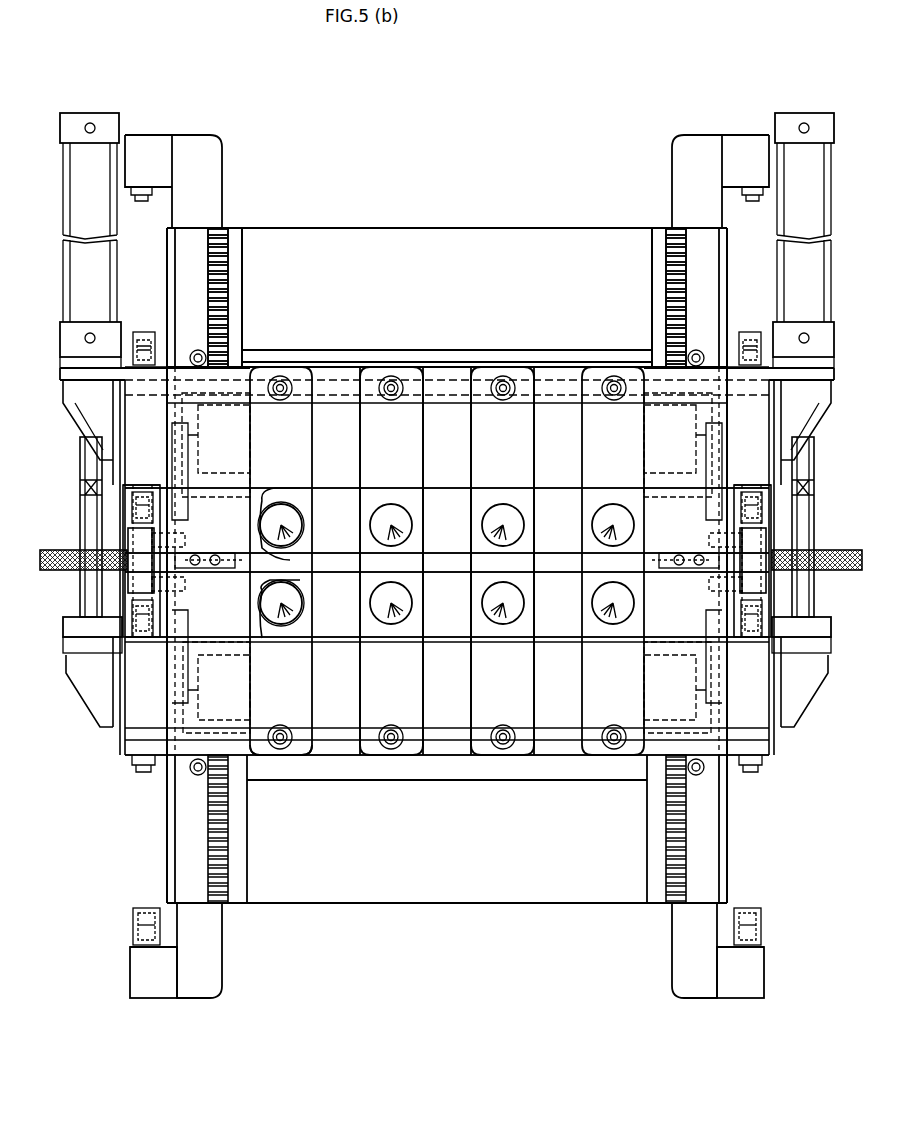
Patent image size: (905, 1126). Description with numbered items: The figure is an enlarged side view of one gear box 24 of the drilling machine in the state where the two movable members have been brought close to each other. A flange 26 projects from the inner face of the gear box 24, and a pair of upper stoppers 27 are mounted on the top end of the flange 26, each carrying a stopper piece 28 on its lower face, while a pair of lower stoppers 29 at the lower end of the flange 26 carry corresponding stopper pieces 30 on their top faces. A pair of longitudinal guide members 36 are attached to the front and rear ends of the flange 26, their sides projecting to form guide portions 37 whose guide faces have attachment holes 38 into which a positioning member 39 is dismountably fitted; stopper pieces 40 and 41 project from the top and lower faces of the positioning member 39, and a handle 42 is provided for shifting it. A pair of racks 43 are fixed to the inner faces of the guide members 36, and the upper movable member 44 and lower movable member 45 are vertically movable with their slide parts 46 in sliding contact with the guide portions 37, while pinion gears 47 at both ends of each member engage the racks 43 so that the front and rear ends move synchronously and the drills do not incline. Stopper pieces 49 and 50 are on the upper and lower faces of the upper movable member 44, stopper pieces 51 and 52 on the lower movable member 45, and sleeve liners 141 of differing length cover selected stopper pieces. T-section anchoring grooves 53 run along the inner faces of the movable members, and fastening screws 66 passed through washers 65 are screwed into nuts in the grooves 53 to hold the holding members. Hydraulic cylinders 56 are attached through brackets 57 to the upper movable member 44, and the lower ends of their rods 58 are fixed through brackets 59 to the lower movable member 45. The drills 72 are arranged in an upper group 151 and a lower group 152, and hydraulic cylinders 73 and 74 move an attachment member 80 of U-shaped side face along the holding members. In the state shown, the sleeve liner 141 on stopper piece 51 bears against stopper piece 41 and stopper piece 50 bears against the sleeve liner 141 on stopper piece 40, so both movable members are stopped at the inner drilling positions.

The gear box 24 is at (392, 230).
The flange 26 is at (474, 230).
The upper stopper 27 is at (748, 145).
The stopper piece 28 is at (755, 201).
The lower stopper 29 is at (790, 972).
The stopper piece 30 is at (755, 912).
The guide member 36 is at (652, 252).
The guide portion 37 is at (727, 252).
The attachment hole 38 is at (716, 556).
The positioning member 39 is at (752, 543).
The stopper piece 40 is at (752, 512).
The stopper piece 41 is at (140, 596).
The handle 42 is at (840, 550).
The rack 43 is at (666, 300).
The upper movable member 44 is at (446, 490).
The lower movable member 45 is at (446, 637).
The slide part 46 is at (768, 688).
The pinion gear 47 is at (672, 688).
The stopper piece 49 is at (752, 340).
The stopper piece 50 is at (752, 495).
The stopper piece 51 is at (447, 701).
The stopper piece 52 is at (755, 772).
The anchoring groove 53 is at (447, 755).
The hydraulic cylinder 56 is at (792, 113).
The bracket 57 is at (825, 376).
The rod 58 is at (814, 584).
The bracket 59 is at (830, 645).
The washer 65 is at (500, 725).
The bolt 66 is at (392, 745).
The drill 72 is at (490, 595).
The hydraulic cylinder 73 is at (290, 455).
The hydraulic cylinder 74 is at (300, 705).
The attachment member 80 is at (300, 495).
The sleeve liner 141 is at (138, 333).
The upper group of drills 151 is at (305, 530).
The lower group of drills 152 is at (305, 613).